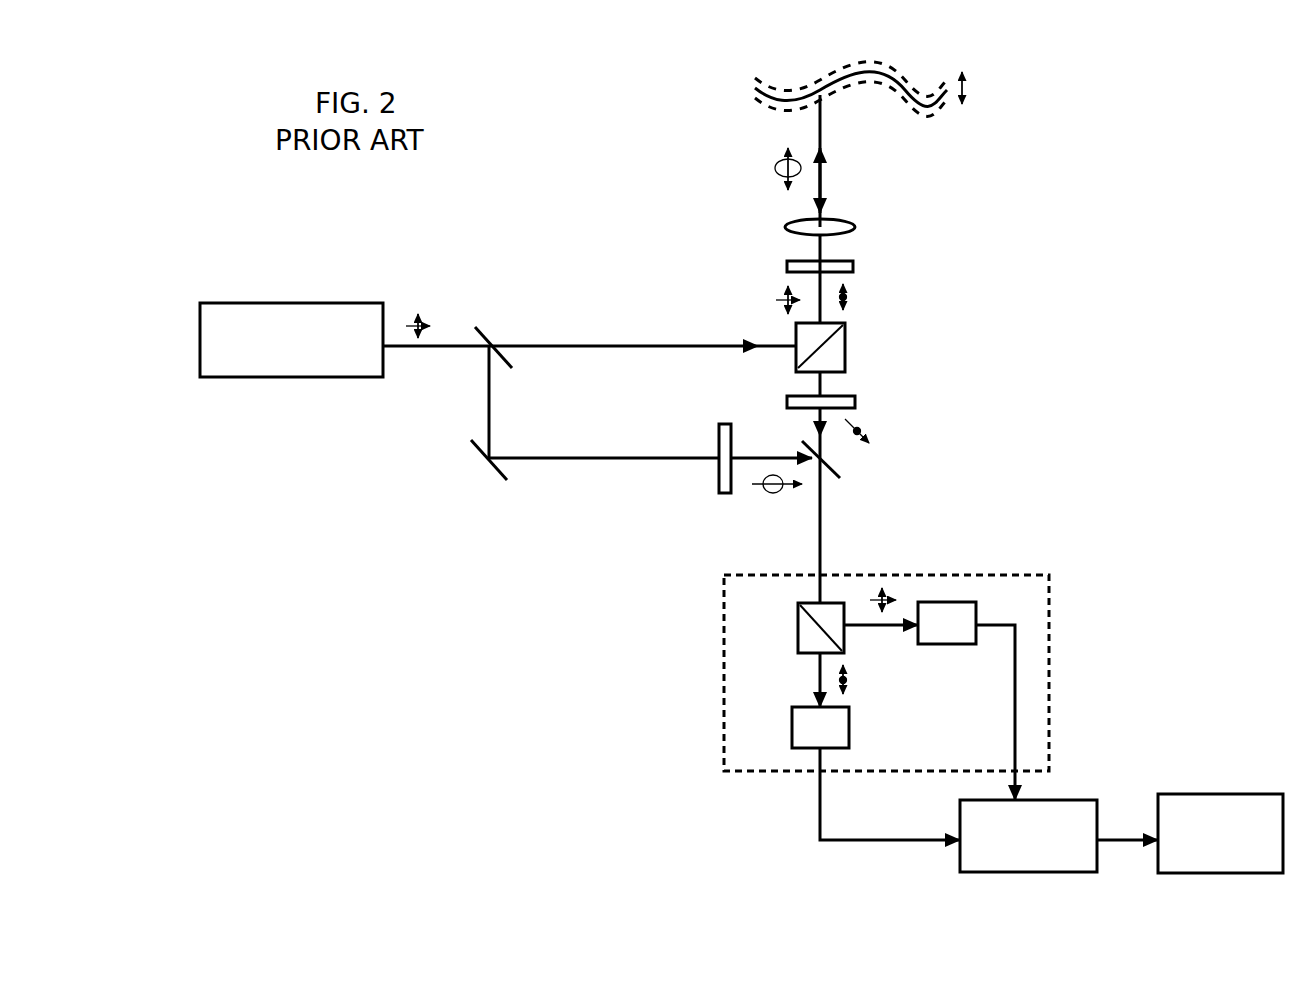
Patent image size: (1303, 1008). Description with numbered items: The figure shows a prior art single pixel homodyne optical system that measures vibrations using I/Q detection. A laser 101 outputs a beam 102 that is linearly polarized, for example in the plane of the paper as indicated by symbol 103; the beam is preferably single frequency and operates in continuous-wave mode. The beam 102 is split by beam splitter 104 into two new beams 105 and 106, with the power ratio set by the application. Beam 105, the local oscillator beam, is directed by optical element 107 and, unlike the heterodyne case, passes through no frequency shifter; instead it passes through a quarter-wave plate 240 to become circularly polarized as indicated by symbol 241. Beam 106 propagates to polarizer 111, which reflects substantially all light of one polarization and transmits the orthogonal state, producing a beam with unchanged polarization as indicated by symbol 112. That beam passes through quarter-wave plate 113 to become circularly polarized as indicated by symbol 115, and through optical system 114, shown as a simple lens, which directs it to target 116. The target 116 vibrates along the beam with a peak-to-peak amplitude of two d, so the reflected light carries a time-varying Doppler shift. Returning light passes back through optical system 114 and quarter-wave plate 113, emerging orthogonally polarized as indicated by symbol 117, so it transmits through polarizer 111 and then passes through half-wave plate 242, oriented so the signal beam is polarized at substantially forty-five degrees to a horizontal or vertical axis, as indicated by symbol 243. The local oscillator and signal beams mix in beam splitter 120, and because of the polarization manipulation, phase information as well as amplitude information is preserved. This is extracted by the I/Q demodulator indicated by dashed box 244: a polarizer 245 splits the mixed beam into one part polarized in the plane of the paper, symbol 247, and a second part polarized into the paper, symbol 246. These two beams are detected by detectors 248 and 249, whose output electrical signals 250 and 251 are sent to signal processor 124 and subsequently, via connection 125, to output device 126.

The laser 101 is at (283, 303).
The beam 102 is at (443, 348).
The symbol 103 is at (433, 308).
The beam splitter 104 is at (487, 331).
The beam 105 is at (487, 418).
The beam 106 is at (537, 342).
The optical element 107 is at (469, 444).
The polarizer 111 is at (848, 343).
The symbol 112 is at (770, 298).
The quarter-wave plate 113 is at (857, 267).
The optical system 114 is at (787, 223).
The symbol 115 is at (772, 166).
The target 116 is at (803, 90).
The symbol 117 is at (855, 302).
The beam splitter 120 is at (838, 474).
The signal processor 124 is at (1030, 876).
The output signal 125 is at (1128, 846).
The output device 126 is at (1208, 876).
The quarter-wave plate 240 is at (722, 497).
The symbol 241 is at (768, 504).
The half-wave plate 242 is at (858, 402).
The symbol 243 is at (880, 439).
The dashed box 244 is at (985, 578).
The polarizer 245 is at (797, 625).
The symbol 246 is at (858, 682).
The symbol 247 is at (891, 586).
The detector 248 is at (792, 730).
The detector 249 is at (960, 648).
The output electrical signal 250 is at (816, 816).
The output electrical signal 251 is at (1013, 700).